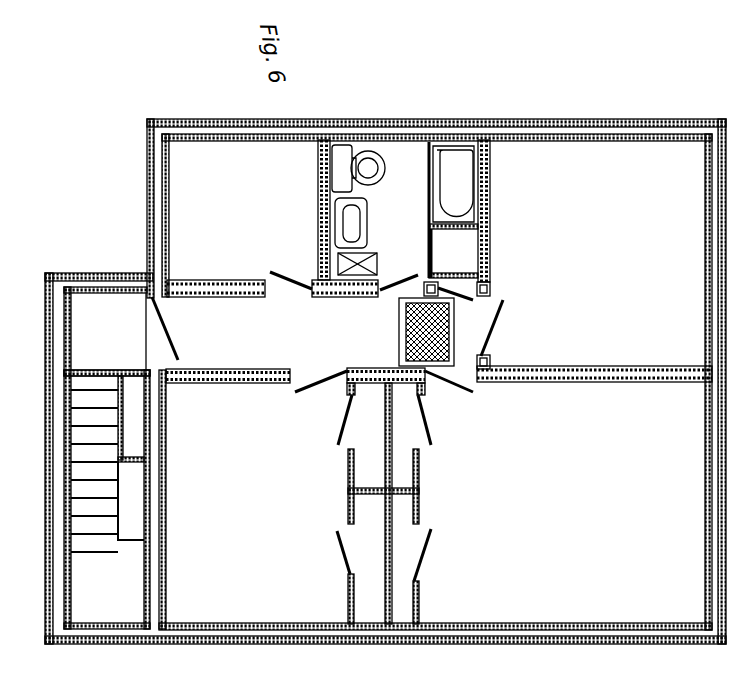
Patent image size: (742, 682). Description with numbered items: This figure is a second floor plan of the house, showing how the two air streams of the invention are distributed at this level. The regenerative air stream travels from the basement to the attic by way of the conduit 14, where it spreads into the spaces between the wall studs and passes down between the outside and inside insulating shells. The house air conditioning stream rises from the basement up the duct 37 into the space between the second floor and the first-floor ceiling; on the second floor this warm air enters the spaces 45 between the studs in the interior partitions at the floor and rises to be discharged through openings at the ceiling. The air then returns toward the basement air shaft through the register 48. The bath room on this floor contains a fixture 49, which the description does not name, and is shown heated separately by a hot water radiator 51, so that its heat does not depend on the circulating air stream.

The conduit 14 is at (141, 376).
The duct 37 is at (130, 522).
The spaces between the studs in the interior partitions 45 is at (215, 280).
The register 48 is at (453, 320).
The toilet 49 is at (381, 142).
The hot water radiator 51 is at (378, 262).